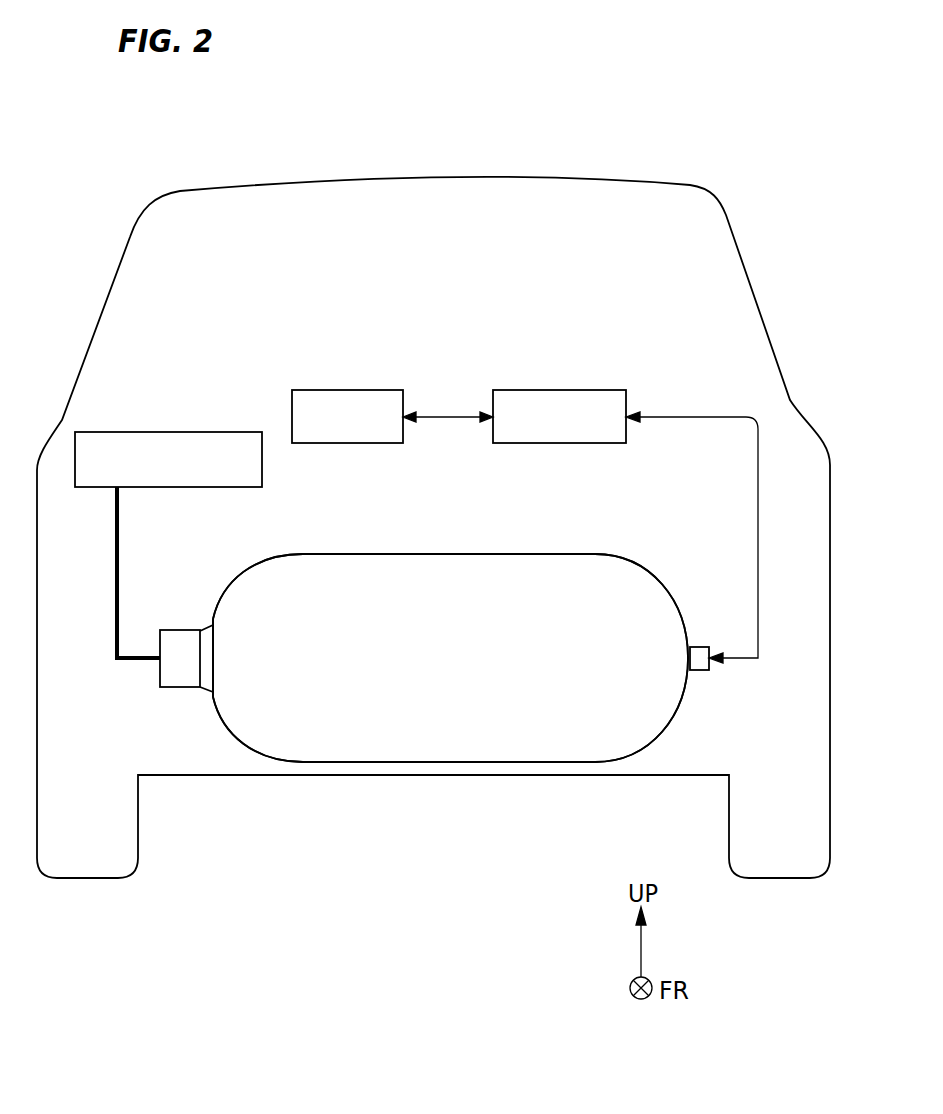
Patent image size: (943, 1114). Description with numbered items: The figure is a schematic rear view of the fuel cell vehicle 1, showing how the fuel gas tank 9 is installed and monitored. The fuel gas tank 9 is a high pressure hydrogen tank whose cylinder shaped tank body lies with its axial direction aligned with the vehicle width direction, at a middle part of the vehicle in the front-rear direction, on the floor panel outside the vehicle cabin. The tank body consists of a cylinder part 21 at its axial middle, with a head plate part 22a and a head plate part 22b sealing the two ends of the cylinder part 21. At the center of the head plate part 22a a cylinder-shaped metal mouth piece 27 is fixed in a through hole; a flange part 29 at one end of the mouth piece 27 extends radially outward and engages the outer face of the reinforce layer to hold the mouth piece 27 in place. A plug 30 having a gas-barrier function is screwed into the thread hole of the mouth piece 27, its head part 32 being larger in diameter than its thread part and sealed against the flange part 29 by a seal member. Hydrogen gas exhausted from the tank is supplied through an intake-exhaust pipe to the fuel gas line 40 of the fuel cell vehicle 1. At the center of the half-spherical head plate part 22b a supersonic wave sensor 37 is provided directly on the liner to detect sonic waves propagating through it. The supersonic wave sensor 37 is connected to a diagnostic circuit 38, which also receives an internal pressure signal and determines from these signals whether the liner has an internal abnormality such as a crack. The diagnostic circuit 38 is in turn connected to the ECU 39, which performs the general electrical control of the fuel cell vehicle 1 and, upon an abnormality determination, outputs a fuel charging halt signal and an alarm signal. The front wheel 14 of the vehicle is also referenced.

The fuel cell vehicle 1 is at (624, 126).
The fuel gas tank 9 is at (448, 328).
The front wheel 14 is at (116, 578).
The cylinder part 21 is at (314, 781).
The head plate part 22a is at (208, 781).
The head plate part 22b is at (587, 781).
The mouth piece 27 is at (198, 624).
The flange part 29 is at (188, 617).
The plug 30 is at (164, 689).
The head part 32 is at (155, 699).
The supersonic wave sensor 37 is at (702, 672).
The diagnostic circuit 38 is at (560, 390).
The ECU 39 is at (349, 390).
The fuel gas line 40 is at (196, 432).